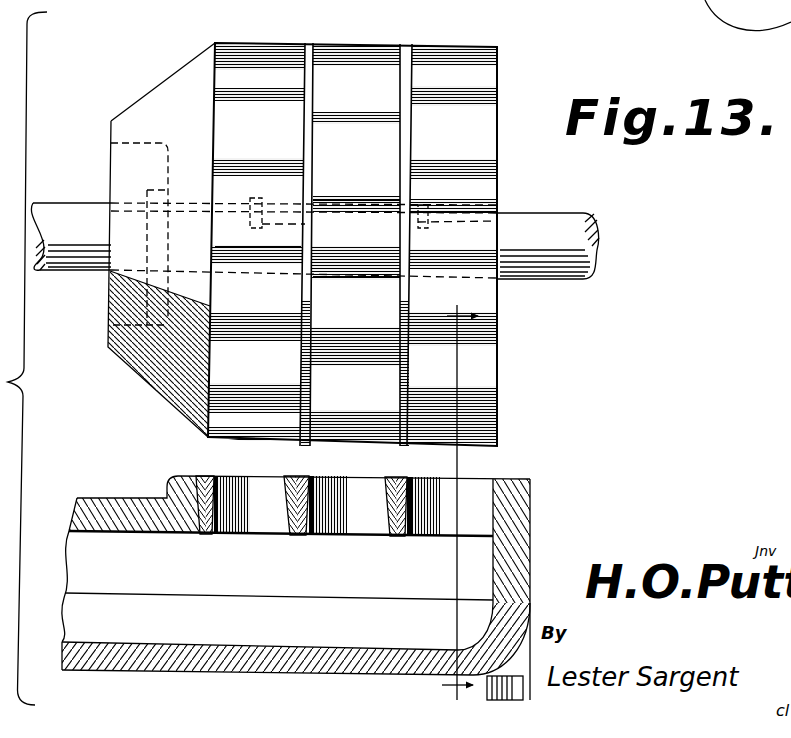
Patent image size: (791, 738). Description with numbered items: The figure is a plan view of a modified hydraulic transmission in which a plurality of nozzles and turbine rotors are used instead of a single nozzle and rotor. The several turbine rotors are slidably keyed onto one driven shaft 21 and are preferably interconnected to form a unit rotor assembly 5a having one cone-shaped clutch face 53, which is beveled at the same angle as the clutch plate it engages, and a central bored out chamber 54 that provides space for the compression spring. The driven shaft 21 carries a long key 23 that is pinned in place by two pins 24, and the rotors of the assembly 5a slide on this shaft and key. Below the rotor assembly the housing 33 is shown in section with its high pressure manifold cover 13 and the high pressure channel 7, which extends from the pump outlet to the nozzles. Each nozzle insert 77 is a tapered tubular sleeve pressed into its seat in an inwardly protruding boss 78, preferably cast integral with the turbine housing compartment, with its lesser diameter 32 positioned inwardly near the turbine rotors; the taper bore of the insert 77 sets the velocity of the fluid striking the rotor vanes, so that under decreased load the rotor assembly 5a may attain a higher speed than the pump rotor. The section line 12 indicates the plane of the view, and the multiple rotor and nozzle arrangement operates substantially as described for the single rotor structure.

The cone-shaped clutch face 53 is at (148, 93).
The unit rotor assembly 5a is at (282, 42).
The driven shaft 21 is at (56, 203).
The long key 23 is at (334, 210).
The pins 24 is at (264, 224).
The central bored out chamber 54 is at (123, 297).
The reverse lever 12 is at (452, 503).
The inwardly protruding boss 78 is at (143, 499).
The lesser diameter of nozzle 32 is at (262, 482).
The nozzle insert 77 is at (323, 538).
The housing 33 is at (512, 540).
The high pressure channel 7 is at (100, 553).
The high pressure manifold cover 13 is at (256, 658).